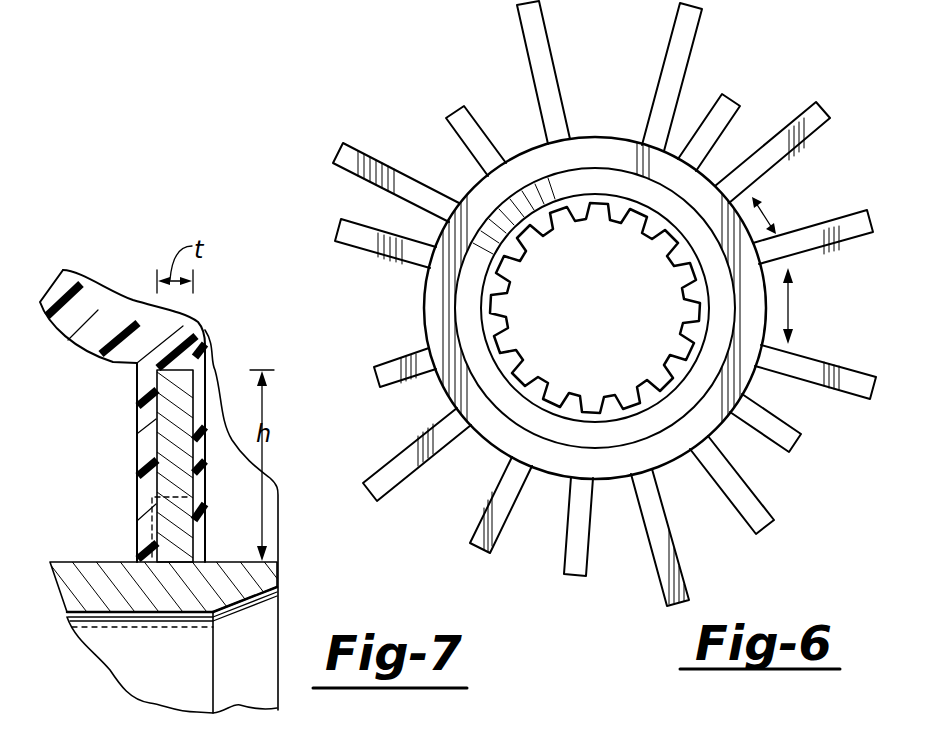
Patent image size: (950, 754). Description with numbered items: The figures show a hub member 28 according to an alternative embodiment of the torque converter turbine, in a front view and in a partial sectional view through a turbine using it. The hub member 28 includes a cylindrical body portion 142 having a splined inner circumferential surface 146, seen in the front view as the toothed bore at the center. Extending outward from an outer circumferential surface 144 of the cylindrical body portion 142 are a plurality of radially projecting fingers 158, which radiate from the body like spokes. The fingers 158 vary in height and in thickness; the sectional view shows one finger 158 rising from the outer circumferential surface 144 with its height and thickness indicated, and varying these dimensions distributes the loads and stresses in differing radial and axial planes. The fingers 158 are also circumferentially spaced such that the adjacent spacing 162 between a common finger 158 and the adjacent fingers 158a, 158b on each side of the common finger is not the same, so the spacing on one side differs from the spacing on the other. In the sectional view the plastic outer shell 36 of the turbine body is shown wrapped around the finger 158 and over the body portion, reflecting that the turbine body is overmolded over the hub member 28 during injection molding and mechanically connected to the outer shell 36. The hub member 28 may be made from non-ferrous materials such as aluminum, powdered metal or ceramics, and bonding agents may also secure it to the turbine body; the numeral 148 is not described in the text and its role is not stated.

In FIG. 6, the hub member 28 is at (482, 97).
In FIG. 6, the hub ring 148 is at (397, 310).
In FIG. 6, the splined inner circumferential surface 146 is at (548, 228).
In FIG. 7, the splined inner circumferential surface 146 is at (138, 620).
In FIG. 6, the radially projecting fingers 158 is at (876, 218).
In FIG. 7, the radially projecting fingers 158 is at (187, 405).
In FIG. 6, the adjacent finger 158a is at (833, 118).
In FIG. 6, the adjacent finger 158b is at (877, 396).
In FIG. 6, the adjacent spacing 162 is at (766, 213).
In FIG. 7, the plastic outer shell 36 is at (125, 348).
In FIG. 7, the outer circumferential surface 144 is at (100, 562).
In FIG. 7, the cylindrical body portion 142 is at (66, 590).